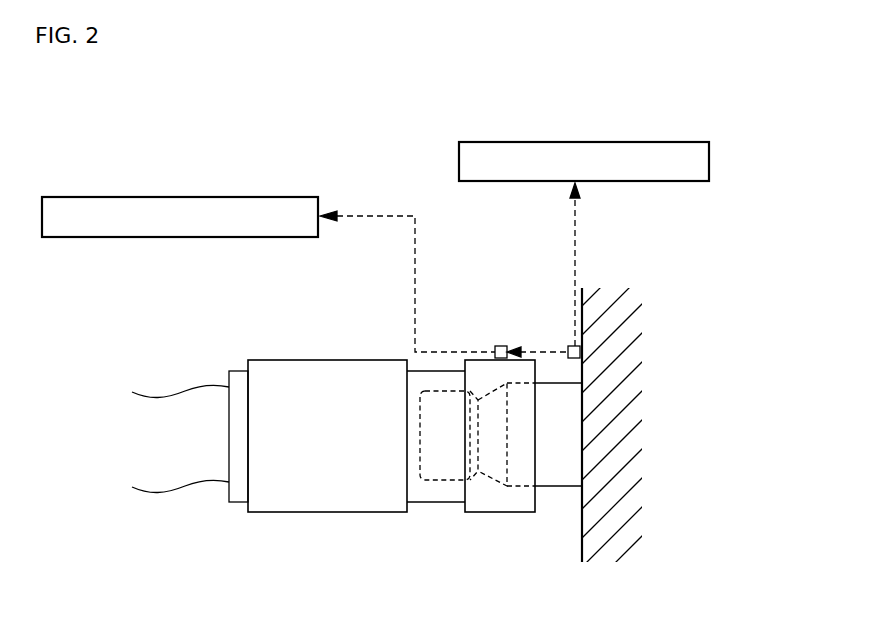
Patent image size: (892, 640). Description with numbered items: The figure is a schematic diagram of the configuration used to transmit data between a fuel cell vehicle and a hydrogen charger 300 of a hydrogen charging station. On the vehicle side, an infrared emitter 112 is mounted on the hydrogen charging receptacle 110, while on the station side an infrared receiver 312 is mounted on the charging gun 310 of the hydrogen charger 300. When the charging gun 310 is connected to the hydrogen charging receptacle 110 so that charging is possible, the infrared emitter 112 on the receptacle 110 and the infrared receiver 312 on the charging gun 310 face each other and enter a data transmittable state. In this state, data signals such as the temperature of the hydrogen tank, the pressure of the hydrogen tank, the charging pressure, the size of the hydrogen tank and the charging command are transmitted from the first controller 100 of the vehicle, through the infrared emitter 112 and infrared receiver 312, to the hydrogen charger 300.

The first controller 100 is at (612, 142).
The hydrogen charger 300 is at (248, 196).
The charging gun 310 is at (500, 513).
The infrared receiver 312 is at (502, 346).
The infrared emitter 112 is at (576, 352).
The hydrogen charging receptacle 110 is at (582, 383).